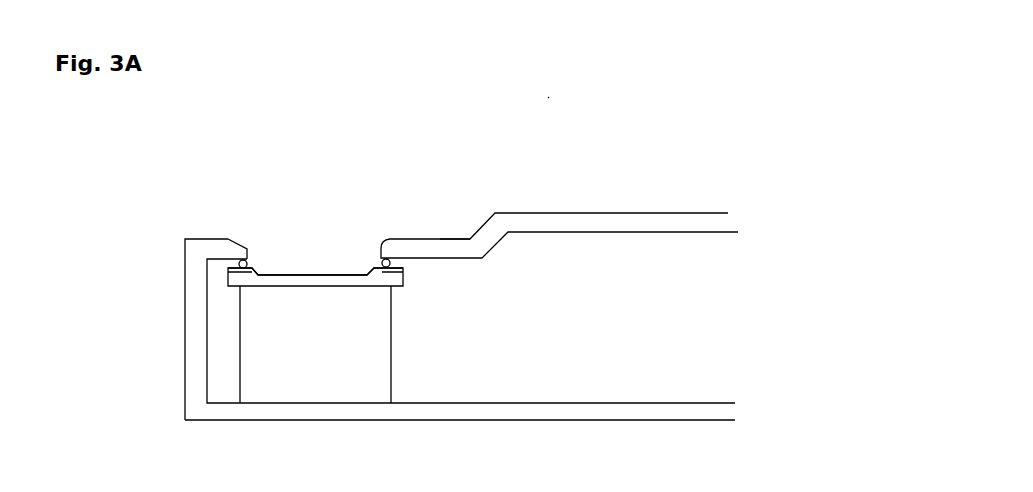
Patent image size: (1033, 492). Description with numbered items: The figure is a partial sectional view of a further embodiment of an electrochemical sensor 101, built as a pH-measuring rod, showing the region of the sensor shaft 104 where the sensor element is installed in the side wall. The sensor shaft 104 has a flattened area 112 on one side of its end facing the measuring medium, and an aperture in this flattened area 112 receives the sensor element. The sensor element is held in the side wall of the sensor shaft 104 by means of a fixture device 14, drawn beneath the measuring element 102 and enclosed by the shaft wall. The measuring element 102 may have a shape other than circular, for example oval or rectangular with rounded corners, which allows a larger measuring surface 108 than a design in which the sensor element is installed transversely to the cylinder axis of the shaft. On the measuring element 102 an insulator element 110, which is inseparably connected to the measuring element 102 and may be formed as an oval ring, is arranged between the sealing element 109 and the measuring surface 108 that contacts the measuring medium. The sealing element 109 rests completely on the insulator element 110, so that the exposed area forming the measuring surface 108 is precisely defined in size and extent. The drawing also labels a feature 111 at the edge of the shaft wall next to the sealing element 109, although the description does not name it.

The electrochemical sensor 101 is at (548, 97).
The measuring element 102 is at (343, 282).
The sensor shaft 104 is at (565, 220).
The measuring surface 108 is at (313, 275).
The sealing element 109 is at (245, 257).
The insulator element 110 is at (238, 262).
The housing lip 111 is at (228, 252).
The flattened area 112 is at (452, 230).
The fixture device 14 is at (285, 337).